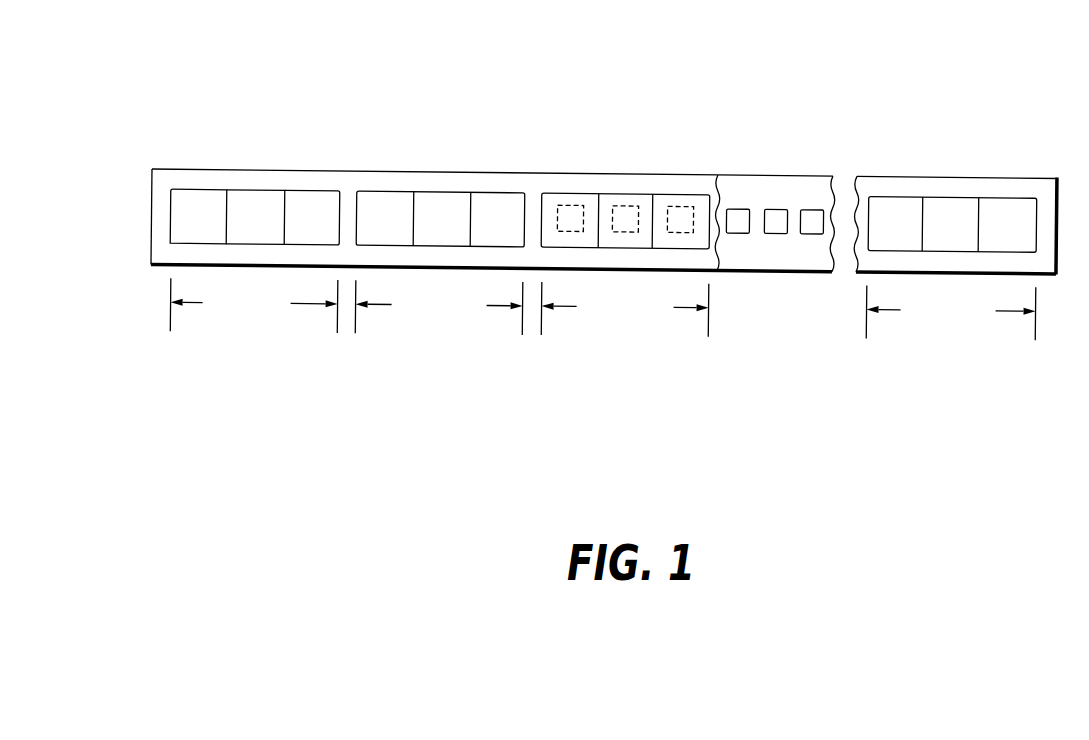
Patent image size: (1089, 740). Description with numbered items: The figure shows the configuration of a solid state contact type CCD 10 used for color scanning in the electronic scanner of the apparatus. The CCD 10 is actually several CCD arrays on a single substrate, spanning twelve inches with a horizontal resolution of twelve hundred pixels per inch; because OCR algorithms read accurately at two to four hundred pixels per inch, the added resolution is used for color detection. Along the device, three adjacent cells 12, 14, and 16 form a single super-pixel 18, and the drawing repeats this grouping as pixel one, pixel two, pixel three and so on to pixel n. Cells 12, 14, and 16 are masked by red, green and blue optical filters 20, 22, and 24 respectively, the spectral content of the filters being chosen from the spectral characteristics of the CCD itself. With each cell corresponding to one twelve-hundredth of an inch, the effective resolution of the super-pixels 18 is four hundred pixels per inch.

The contact type CCD 10 is at (467, 148).
The cell 12 is at (573, 200).
The cell 14 is at (627, 200).
The cell 16 is at (682, 200).
The super-pixel 18 is at (257, 331).
The red optical filter 20 is at (191, 189).
The green optical filter 22 is at (257, 189).
The blue optical filter 24 is at (310, 188).